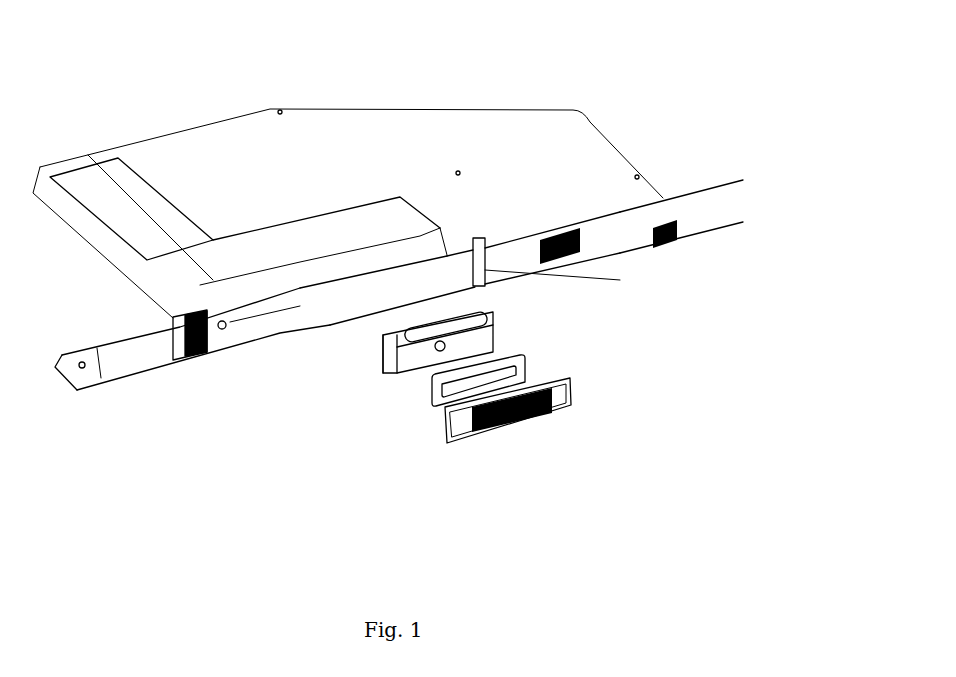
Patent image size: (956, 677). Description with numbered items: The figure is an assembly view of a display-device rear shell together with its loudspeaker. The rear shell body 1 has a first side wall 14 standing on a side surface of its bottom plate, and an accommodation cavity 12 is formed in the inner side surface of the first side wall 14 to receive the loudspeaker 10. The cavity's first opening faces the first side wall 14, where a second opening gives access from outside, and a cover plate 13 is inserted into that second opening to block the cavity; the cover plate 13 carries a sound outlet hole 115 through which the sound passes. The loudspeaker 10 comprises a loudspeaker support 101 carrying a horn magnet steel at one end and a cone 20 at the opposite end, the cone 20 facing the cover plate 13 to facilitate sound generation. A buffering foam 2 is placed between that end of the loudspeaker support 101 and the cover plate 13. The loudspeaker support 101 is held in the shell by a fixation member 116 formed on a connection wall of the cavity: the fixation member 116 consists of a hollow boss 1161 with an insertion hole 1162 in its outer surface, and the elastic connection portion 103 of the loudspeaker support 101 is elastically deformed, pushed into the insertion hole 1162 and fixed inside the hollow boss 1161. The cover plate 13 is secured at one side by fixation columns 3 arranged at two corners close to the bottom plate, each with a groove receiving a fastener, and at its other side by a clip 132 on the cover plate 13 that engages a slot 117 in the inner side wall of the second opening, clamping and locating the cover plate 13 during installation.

The rear shell body 1 is at (372, 118).
The buffering foam 2 is at (528, 363).
The fixation column 3 is at (317, 283).
The loudspeaker 10 is at (390, 377).
The accommodation cavity 12 is at (353, 295).
The cover plate 13 is at (568, 405).
The first side wall 14 is at (279, 328).
The cone 20 is at (418, 357).
The loudspeaker support 101 is at (378, 355).
The elastic connection portion 103 is at (366, 364).
The sound outlet hole 115 is at (500, 430).
The fixation member 116 is at (782, 266).
The slot 117 is at (328, 330).
The clip 132 is at (553, 417).
The hollow boss 1161 is at (424, 275).
The insertion hole 1162 is at (417, 270).